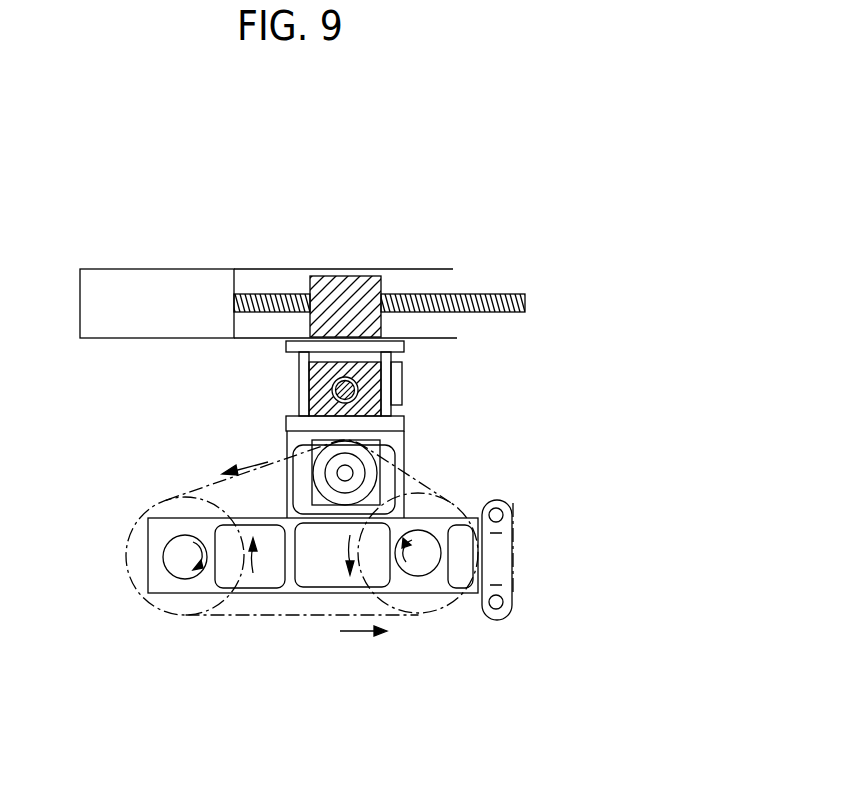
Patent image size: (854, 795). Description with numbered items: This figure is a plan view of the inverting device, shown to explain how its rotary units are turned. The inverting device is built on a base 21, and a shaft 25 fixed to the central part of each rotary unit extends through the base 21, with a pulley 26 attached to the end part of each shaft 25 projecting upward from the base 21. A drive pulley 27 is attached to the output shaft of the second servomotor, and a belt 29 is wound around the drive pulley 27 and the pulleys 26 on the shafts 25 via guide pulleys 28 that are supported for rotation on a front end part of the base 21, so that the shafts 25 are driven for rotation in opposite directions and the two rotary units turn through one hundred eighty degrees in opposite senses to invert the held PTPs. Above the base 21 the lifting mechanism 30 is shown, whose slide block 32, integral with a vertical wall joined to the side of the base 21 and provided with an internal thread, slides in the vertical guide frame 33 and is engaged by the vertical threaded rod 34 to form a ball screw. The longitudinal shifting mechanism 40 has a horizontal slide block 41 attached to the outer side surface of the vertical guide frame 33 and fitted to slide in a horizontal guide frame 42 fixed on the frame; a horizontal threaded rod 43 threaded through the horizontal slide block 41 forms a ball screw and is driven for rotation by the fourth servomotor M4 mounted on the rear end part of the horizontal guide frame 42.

The fourth servomotor M4 is at (150, 290).
The longitudinal shifting mechanism 40 is at (255, 258).
The horizontal slide block 41 is at (346, 285).
The horizontal guide frame 42 is at (297, 268).
The horizontal threaded rod 43 is at (478, 292).
The lifting mechanism 30 is at (282, 400).
The slide block 32 is at (382, 374).
The vertical guide frame 33 is at (300, 382).
The vertical threaded rod 34 is at (359, 388).
The base 21 is at (291, 594).
The shaft 25 is at (170, 560).
The pulley 26 is at (183, 600).
The drive pulley 27 is at (318, 476).
The guide pulley 28 is at (497, 500).
The belt 29 is at (212, 484).